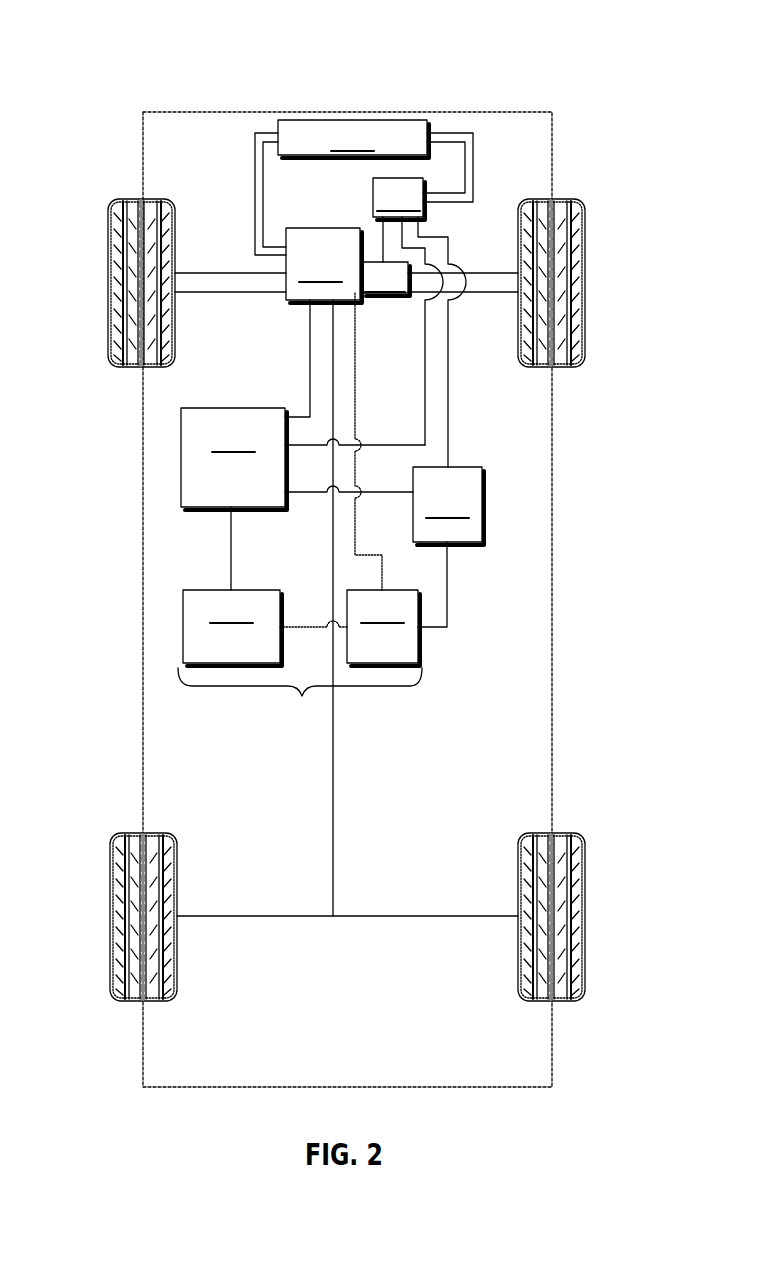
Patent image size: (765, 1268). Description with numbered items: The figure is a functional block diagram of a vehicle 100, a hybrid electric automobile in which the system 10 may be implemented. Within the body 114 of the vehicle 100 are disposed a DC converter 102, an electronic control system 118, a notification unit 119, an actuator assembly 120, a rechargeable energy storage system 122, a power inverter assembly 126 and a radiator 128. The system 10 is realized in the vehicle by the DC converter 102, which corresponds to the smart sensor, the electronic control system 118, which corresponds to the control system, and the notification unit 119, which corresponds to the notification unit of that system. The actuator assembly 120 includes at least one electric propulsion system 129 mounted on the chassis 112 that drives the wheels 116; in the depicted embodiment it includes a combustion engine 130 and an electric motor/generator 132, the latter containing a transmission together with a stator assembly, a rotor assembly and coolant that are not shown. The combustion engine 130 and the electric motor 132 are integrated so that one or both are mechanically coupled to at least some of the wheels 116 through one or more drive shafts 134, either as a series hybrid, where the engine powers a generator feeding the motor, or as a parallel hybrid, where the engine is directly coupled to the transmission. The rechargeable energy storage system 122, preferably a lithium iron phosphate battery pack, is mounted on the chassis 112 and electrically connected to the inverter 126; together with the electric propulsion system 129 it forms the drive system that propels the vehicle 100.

The vehicle 100 is at (137, 38).
The body 114 is at (143, 738).
The wheels 116 is at (108, 282).
The drive shafts 134 is at (208, 272).
The chassis 112 is at (333, 788).
The radiator 128 is at (353, 139).
The electric propulsion system 129 is at (378, 260).
The power inverter assembly 126 is at (419, 322).
The combustion engine 130 is at (323, 322).
The electric motor/generator 132 is at (382, 425).
The actuator assembly 120 is at (372, 312).
The electronic control system 118 is at (303, 499).
The rechargeable energy storage system 122 is at (448, 547).
The notification unit 119 is at (265, 628).
The DC converter 102 is at (383, 628).
The system 10 is at (300, 703).